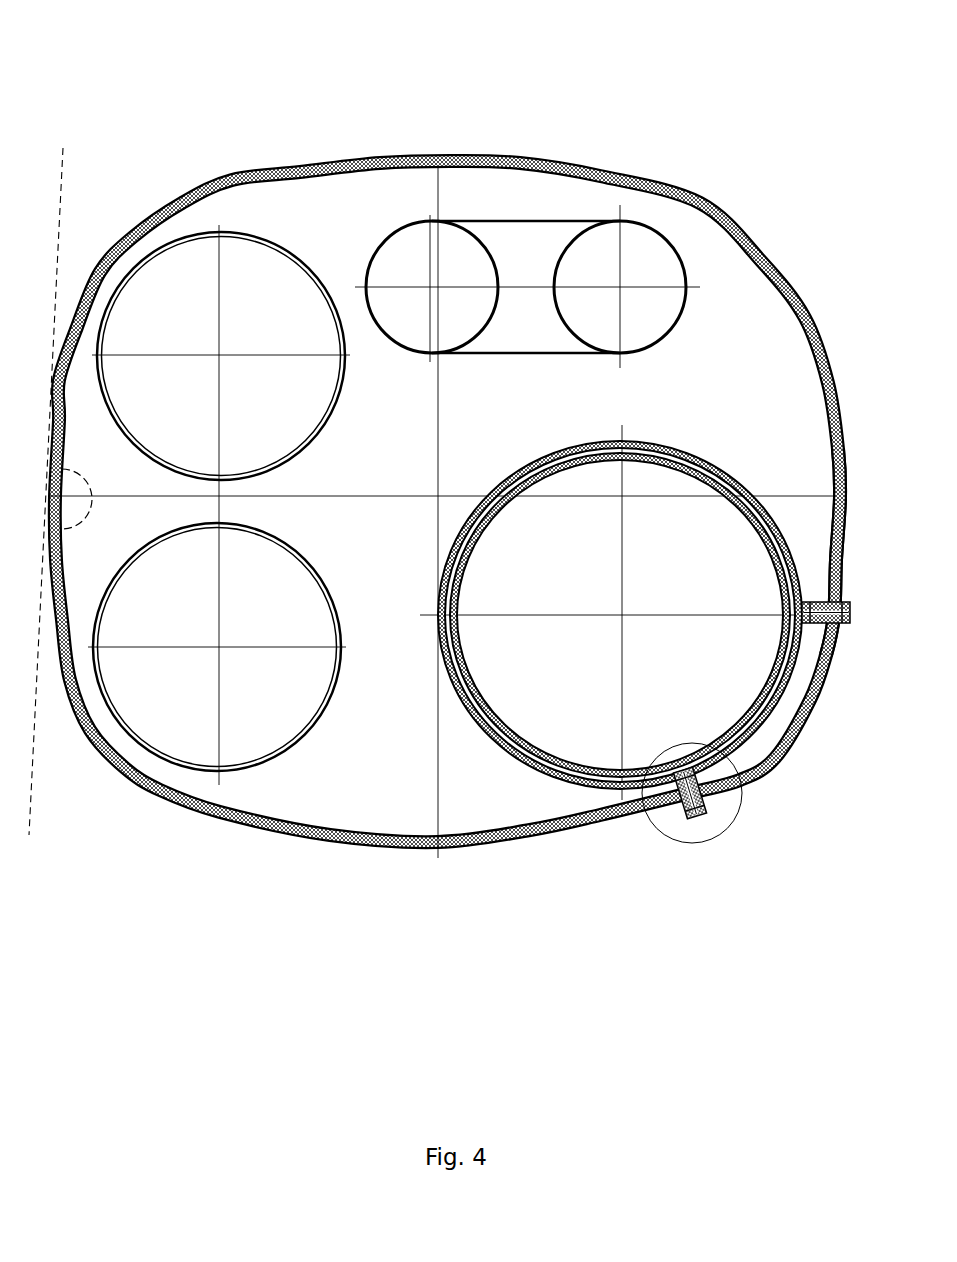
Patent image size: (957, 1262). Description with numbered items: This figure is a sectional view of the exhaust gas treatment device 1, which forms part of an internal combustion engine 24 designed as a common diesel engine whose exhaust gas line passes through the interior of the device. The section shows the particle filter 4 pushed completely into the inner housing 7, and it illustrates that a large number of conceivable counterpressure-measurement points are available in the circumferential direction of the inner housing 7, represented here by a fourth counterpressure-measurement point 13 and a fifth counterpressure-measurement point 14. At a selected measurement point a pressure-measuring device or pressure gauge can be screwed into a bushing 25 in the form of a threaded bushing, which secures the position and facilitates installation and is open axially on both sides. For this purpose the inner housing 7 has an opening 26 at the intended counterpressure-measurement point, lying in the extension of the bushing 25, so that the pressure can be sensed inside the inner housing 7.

The exhaust gas treatment device 1 is at (150, 62).
The internal combustion engine 24 is at (744, 150).
The fourth counterpressure-measurement point 13 is at (810, 590).
The particle filter 4 is at (631, 630).
The inner housing 7 is at (510, 757).
The fifth counterpressure-measurement point 14 is at (750, 795).
The bushing 25 is at (838, 637).
The opening 26 is at (798, 612).